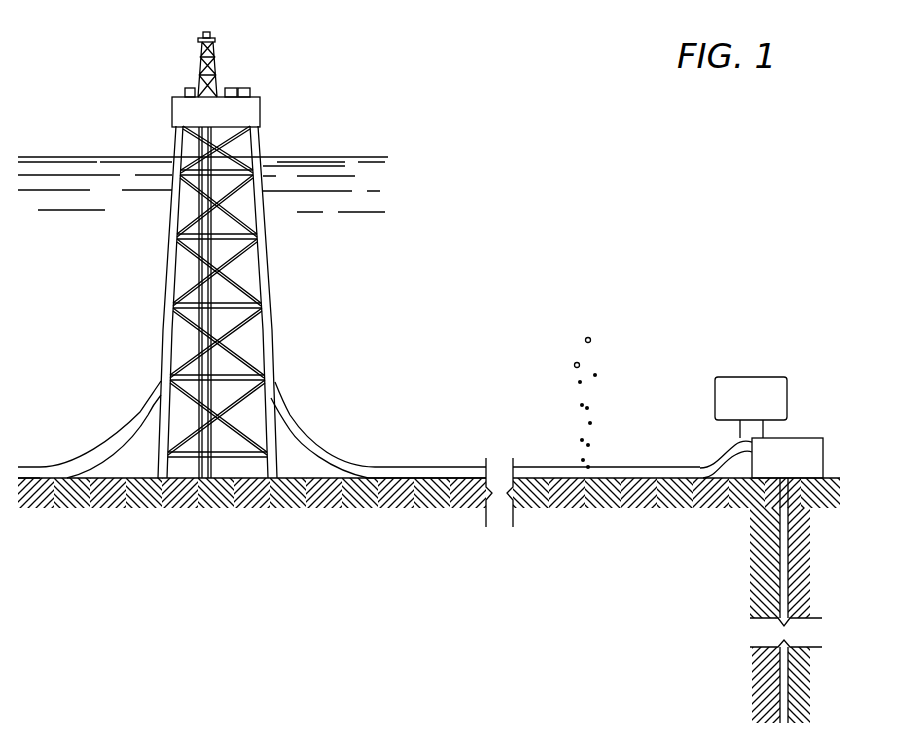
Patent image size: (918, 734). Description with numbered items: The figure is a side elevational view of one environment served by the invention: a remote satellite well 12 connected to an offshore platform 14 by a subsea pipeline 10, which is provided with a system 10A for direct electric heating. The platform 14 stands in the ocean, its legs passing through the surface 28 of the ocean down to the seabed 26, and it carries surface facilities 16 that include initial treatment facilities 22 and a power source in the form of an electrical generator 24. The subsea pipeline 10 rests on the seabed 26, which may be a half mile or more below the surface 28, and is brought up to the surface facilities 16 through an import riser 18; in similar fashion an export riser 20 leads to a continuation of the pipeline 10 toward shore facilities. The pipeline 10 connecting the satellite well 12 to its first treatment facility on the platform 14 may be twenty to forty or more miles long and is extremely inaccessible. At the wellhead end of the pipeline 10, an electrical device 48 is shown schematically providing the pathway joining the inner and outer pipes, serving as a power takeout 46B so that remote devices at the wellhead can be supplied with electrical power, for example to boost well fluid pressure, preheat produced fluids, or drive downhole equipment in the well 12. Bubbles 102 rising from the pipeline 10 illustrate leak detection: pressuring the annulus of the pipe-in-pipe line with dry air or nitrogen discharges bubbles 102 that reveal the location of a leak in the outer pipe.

The subsea pipeline 10 is at (43, 466).
The system for direct electric heating 10A is at (349, 353).
The remote satellite well 12 is at (775, 578).
The platform 14 is at (282, 106).
The surface facilities 16 is at (257, 79).
The import riser 18 is at (272, 304).
The export riser 20 is at (158, 387).
The initial treatment facilities 22 is at (236, 88).
The electrical generator 24 is at (182, 88).
The seabed 26 is at (115, 477).
The surface of the ocean 28 is at (73, 155).
The power takeout 46B is at (766, 428).
The electrical device 48 is at (768, 376).
The bubbles 102 is at (578, 381).